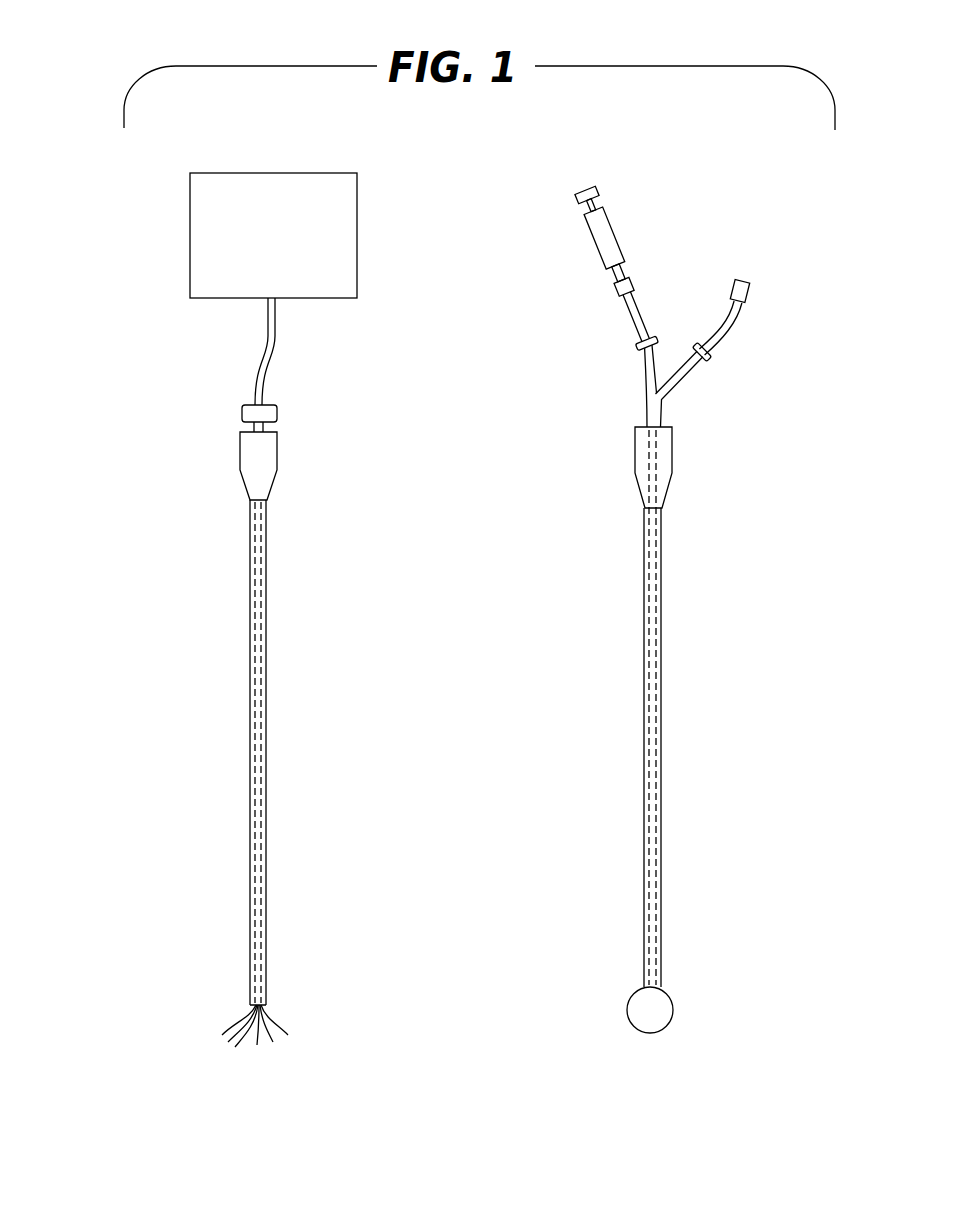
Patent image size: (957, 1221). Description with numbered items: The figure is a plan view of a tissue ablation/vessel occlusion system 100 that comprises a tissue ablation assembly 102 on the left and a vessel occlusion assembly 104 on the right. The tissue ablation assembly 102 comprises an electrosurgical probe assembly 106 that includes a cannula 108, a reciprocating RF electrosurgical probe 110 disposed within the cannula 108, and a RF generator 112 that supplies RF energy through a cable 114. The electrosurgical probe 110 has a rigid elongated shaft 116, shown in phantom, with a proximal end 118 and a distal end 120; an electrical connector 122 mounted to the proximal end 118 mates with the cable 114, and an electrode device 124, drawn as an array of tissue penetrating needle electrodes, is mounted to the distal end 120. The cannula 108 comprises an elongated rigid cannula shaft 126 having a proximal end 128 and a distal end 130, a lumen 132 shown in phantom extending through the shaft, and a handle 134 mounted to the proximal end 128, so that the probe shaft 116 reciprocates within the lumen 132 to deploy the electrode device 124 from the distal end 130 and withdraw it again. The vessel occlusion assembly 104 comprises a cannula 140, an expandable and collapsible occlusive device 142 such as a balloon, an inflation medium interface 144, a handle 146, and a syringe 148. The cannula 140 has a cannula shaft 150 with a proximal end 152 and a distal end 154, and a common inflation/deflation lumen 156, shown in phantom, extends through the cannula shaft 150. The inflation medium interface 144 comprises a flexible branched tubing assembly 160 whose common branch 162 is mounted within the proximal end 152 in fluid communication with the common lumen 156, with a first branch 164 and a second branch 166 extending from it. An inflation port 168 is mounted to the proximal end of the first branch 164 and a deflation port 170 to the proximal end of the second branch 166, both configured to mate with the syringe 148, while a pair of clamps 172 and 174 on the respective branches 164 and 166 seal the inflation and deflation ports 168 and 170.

The tissue ablation/vessel occlusion system 100 is at (476, 176).
The tissue ablation assembly 102 is at (100, 330).
The vessel occlusion assembly 104 is at (833, 375).
The electrosurgical probe assembly 106 is at (296, 555).
The cannula 108 is at (247, 627).
The RF electrosurgical probe 110 is at (258, 598).
The RF generator 112 is at (343, 278).
The cable 114 is at (270, 340).
The elongated shaft 116 is at (258, 673).
The proximal end 118 is at (265, 508).
The distal end 120 is at (267, 987).
The electrical connector 122 is at (242, 415).
The electrode device 124 is at (240, 1025).
The cannula shaft 126 is at (249, 802).
The proximal end 128 is at (250, 520).
The distal end 130 is at (249, 952).
The lumen 132 is at (249, 860).
The handle 134 is at (248, 465).
The cannula 140 is at (664, 683).
The occlusive device 142 is at (675, 1000).
The inflation medium interface 144 is at (688, 311).
The handle 146 is at (657, 487).
The syringe 148 is at (607, 228).
The cannula shaft 150 is at (662, 737).
The proximal end 152 is at (662, 545).
The distal end 154 is at (662, 937).
The common inflation/deflation lumen 156 is at (662, 785).
The flexible branched tubing assembly 160 is at (692, 385).
The common branch 162 is at (650, 410).
The first branch 164 is at (635, 322).
The second branch 166 is at (727, 327).
The inflation port 168 is at (618, 297).
The deflation port 170 is at (753, 287).
The clamp 172 is at (637, 350).
The clamp 174 is at (710, 362).